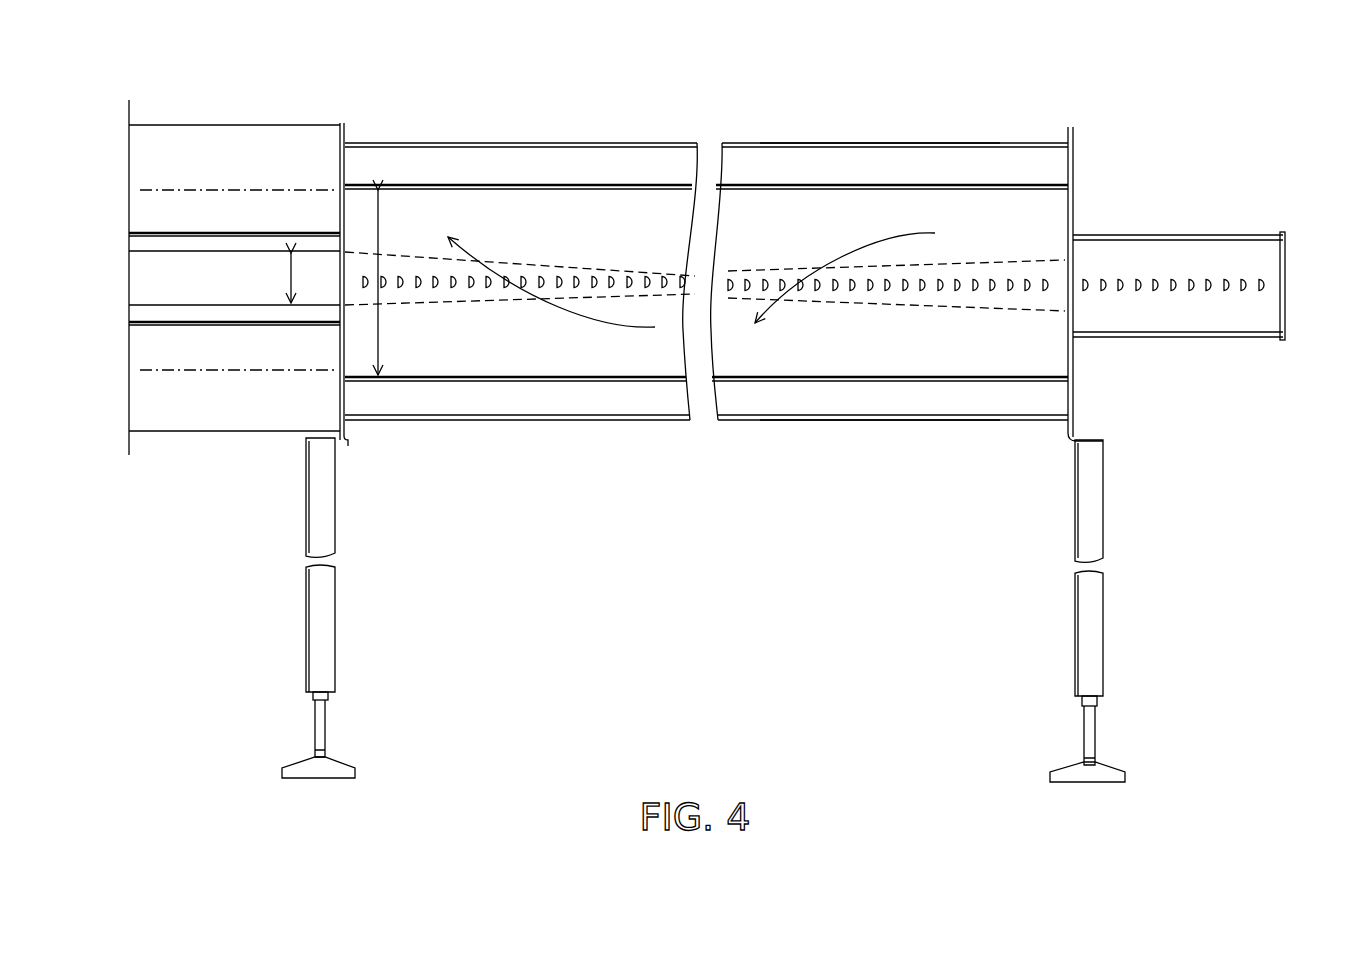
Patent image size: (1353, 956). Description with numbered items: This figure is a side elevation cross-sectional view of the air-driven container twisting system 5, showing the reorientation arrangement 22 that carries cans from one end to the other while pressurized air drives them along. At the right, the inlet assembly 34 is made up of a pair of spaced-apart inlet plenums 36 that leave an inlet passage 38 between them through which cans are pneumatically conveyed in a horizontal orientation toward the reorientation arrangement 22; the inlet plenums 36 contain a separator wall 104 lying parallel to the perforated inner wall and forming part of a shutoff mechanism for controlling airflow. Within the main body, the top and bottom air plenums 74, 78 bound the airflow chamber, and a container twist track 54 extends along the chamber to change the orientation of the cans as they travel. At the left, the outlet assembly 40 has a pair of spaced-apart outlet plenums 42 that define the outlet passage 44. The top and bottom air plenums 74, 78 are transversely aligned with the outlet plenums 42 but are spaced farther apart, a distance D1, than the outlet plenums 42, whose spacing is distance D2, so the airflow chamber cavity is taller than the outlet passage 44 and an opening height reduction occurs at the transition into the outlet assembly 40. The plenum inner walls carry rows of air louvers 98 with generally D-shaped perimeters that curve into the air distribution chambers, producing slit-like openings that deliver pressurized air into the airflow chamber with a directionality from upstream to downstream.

The air-driven container twisting system 5 is at (637, 57).
The reorientation arrangement 22 is at (520, 228).
The inlet assembly 34 is at (1207, 230).
The inlet plenums 36 is at (1235, 233).
The inlet passage 38 is at (1262, 258).
The outlet assembly 40 is at (252, 66).
The outlet plenums 42 is at (287, 123).
The outlet passage 44 is at (132, 268).
The container twist track 54 is at (754, 268).
The top air plenum 74 is at (800, 147).
The bottom air plenum 78 is at (790, 418).
The air louvers 98 is at (298, 233).
The separator wall 104 is at (170, 190).
The distance between top and bottom air plenums D1 is at (380, 335).
The distance between outlet plenums D2 is at (290, 277).